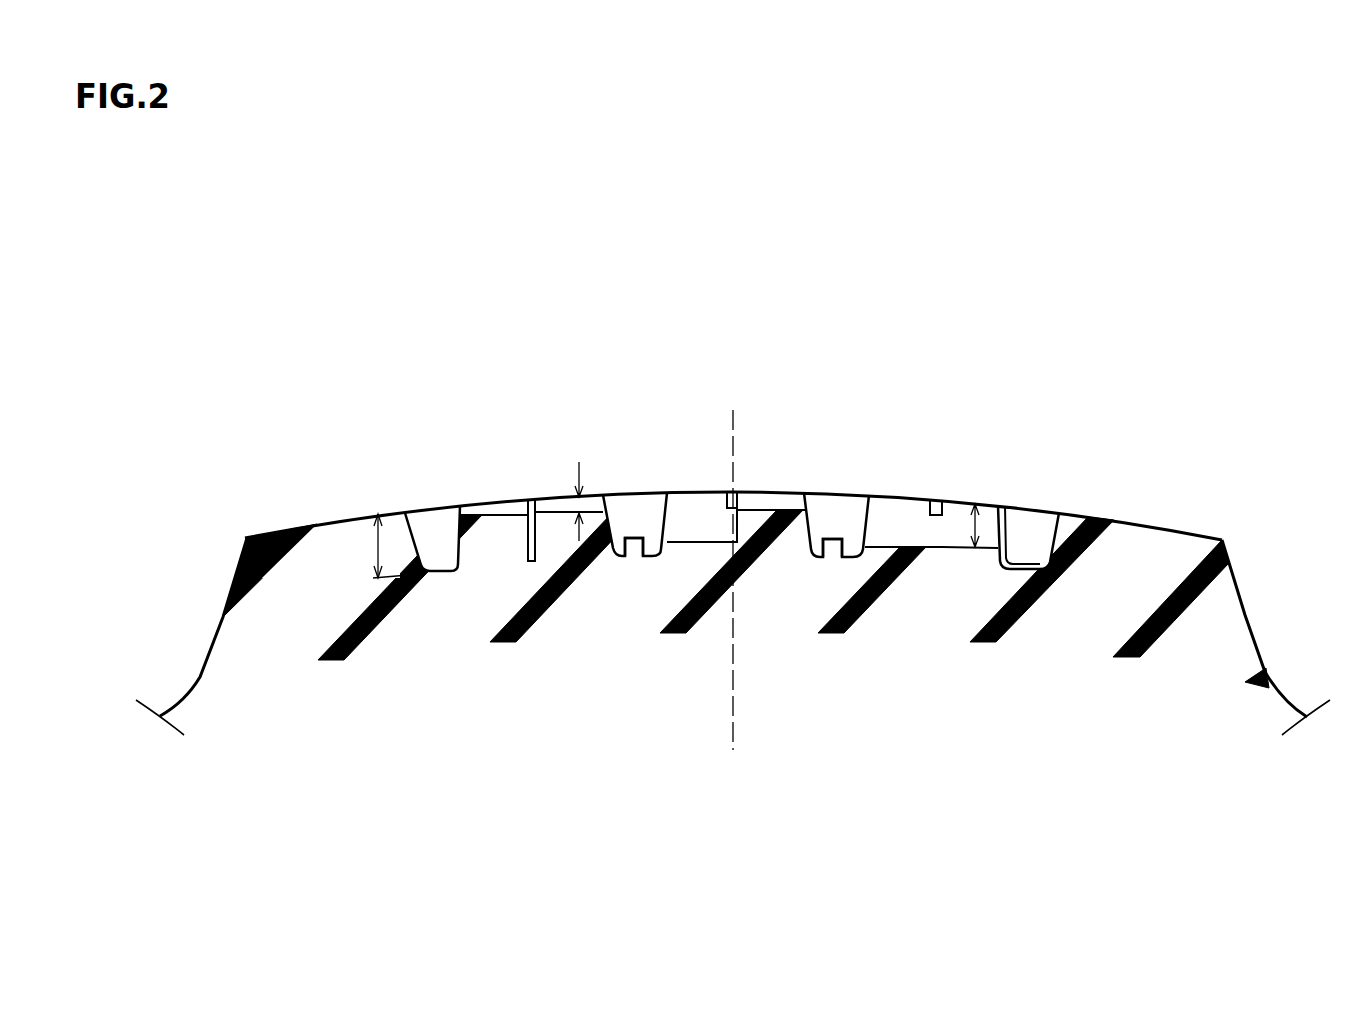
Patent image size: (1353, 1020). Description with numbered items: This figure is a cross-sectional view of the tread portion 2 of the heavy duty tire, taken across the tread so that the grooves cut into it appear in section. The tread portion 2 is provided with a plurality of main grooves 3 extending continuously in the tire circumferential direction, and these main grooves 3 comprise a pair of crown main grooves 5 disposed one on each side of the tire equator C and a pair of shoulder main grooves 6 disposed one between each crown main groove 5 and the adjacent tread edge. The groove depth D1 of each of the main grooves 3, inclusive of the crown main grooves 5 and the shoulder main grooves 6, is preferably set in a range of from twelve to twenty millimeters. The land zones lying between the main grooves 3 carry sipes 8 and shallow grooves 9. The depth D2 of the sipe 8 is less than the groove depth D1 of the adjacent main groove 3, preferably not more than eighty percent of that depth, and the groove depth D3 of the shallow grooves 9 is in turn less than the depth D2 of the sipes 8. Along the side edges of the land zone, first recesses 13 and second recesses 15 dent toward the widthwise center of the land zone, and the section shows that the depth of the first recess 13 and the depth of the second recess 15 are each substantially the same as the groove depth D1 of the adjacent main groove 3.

The tread portion 2 is at (1094, 330).
The main groove 3 is at (435, 528).
The crown main groove 5 is at (736, 525).
The shoulder main groove 6 is at (732, 538).
The sipe 8 is at (547, 510).
The shallow groove 9 is at (507, 508).
The first recess 13 is at (660, 552).
The second recess 15 is at (1019, 508).
The groove depth D1 is at (376, 552).
The depth of the sipe D2 is at (975, 527).
The groove depth of the shallow grooves D3 is at (579, 516).
The tire equator C is at (732, 566).